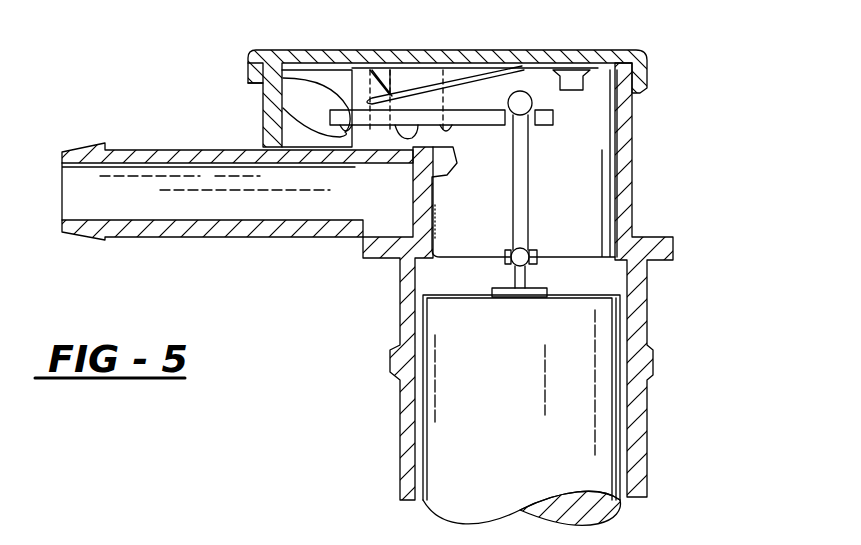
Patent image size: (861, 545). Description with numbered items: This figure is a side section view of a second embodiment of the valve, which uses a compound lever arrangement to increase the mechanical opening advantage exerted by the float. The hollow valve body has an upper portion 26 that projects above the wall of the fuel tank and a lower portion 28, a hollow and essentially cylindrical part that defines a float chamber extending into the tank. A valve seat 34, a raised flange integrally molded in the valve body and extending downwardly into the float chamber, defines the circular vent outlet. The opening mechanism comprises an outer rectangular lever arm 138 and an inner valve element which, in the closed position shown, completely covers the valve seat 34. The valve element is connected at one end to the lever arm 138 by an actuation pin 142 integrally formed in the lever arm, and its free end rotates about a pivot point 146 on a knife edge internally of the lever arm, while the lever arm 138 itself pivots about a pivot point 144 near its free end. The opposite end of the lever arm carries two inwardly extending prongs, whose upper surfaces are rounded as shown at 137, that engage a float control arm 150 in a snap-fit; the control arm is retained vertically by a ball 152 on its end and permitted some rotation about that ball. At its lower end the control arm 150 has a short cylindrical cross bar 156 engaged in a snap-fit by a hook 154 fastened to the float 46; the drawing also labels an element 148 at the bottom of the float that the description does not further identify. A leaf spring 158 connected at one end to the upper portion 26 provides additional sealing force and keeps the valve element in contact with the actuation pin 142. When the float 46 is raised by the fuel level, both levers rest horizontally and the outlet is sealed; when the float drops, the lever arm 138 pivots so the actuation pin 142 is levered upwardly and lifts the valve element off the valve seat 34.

The upper portion 26 is at (633, 50).
The lower portion 28 is at (640, 320).
The valve seat 34 is at (263, 63).
The float 46 is at (603, 425).
The rounded upper surfaces of prongs 137 is at (553, 125).
The lever arm 138 is at (352, 120).
The actuation pin 142 is at (282, 110).
The pivot point 144 is at (405, 133).
The pivot point 146 is at (413, 155).
The lower plate 148 is at (441, 416).
The float control arm 150 is at (530, 175).
The ball 152 is at (530, 96).
The hook 154 is at (512, 256).
The cross bar 156 is at (534, 255).
The leaf spring 158 is at (484, 72).